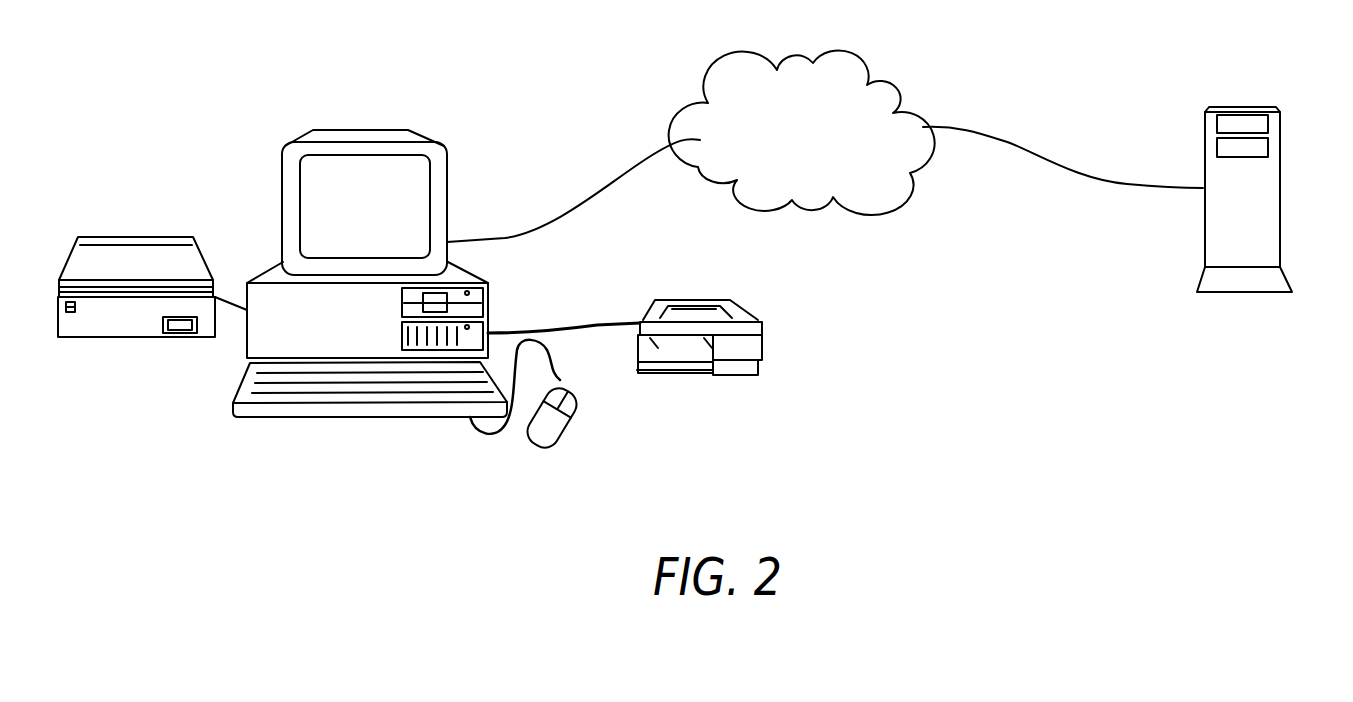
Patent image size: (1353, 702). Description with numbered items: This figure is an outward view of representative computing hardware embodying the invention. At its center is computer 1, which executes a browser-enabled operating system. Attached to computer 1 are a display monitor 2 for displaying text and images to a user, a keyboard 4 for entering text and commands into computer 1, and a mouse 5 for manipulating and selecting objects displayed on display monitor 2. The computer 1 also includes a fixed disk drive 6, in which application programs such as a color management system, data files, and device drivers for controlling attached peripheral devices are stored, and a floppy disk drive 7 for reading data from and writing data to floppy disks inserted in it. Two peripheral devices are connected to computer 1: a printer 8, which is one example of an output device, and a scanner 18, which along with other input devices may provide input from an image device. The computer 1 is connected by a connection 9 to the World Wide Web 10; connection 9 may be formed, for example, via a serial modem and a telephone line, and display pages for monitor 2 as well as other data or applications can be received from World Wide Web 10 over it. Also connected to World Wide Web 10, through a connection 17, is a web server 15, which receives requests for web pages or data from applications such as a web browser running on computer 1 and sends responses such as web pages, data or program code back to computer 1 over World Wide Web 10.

The computer 1 is at (414, 102).
The display monitor 2 is at (287, 177).
The keyboard 4 is at (273, 417).
The mouse 5 is at (537, 447).
The fixed disk drive 6 is at (423, 352).
The floppy disk drive 7 is at (483, 307).
The printer 8 is at (762, 325).
The connection 9 is at (573, 208).
The World Wide Web 10 is at (805, 63).
The web server 15 is at (1280, 135).
The connection 17 is at (995, 137).
The scanner 18 is at (103, 330).